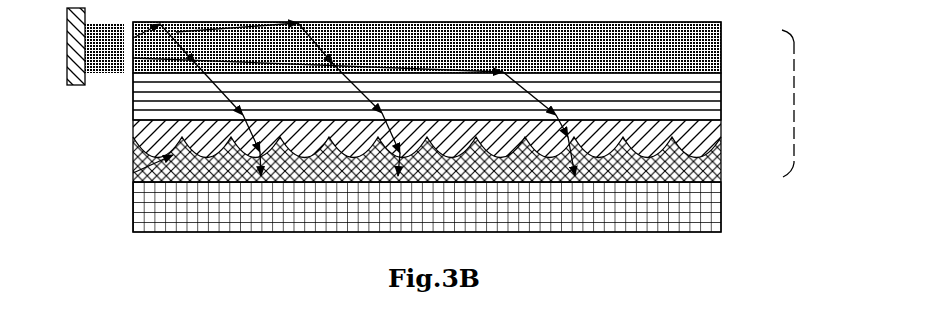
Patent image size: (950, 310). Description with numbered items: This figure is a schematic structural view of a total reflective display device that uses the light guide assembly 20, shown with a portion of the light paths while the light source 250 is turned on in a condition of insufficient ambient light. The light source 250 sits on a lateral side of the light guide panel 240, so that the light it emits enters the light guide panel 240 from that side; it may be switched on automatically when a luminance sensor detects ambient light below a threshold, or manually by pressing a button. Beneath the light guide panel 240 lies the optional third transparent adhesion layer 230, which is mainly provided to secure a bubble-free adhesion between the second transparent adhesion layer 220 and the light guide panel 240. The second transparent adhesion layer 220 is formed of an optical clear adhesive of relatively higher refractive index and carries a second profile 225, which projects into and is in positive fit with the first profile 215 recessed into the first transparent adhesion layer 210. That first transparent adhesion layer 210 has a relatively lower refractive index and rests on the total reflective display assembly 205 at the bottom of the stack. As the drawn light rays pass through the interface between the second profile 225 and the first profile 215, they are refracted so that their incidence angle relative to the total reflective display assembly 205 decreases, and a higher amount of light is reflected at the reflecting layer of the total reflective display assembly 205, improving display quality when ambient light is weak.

The light guide assembly 20 is at (845, 111).
The total reflective display assembly 205 is at (770, 213).
The first transparent adhesion layer 210 is at (770, 180).
The first profile 215 is at (133, 173).
The second transparent adhesion layer 220 is at (770, 147).
The second profile 225 is at (152, 147).
The third transparent adhesion layer 230 is at (770, 106).
The light guide panel 240 is at (770, 56).
The light source 250 is at (56, 60).